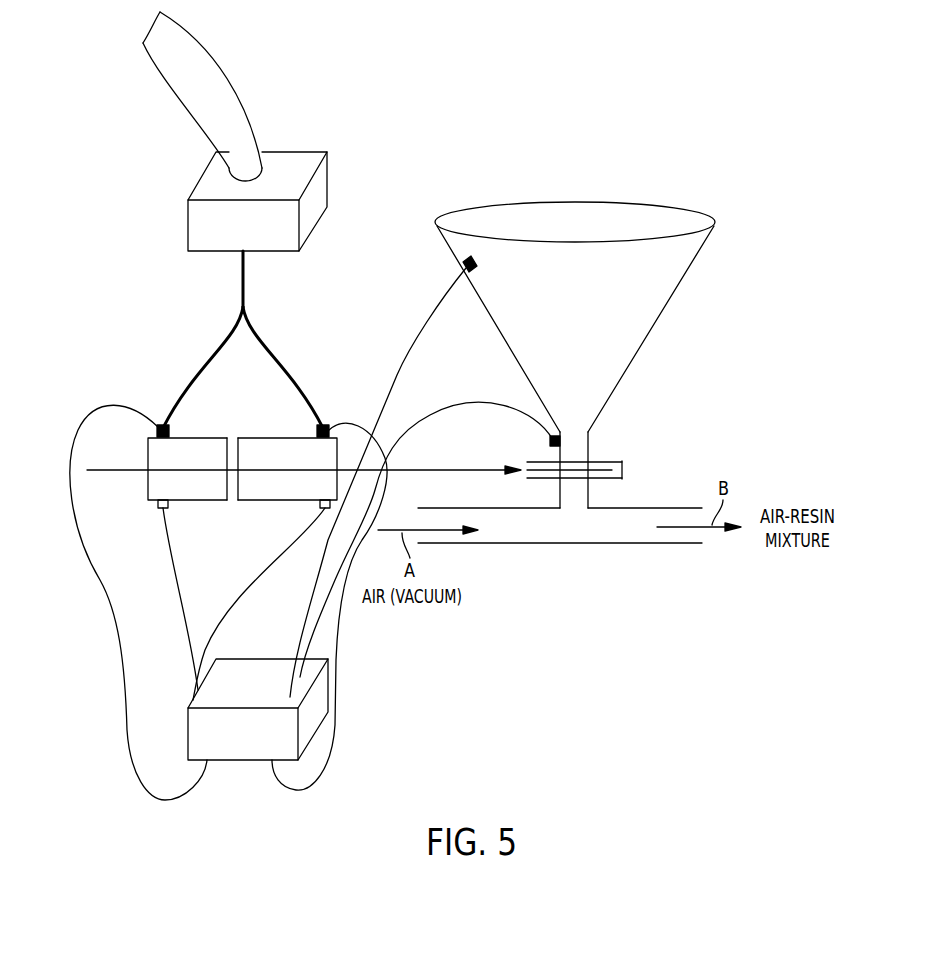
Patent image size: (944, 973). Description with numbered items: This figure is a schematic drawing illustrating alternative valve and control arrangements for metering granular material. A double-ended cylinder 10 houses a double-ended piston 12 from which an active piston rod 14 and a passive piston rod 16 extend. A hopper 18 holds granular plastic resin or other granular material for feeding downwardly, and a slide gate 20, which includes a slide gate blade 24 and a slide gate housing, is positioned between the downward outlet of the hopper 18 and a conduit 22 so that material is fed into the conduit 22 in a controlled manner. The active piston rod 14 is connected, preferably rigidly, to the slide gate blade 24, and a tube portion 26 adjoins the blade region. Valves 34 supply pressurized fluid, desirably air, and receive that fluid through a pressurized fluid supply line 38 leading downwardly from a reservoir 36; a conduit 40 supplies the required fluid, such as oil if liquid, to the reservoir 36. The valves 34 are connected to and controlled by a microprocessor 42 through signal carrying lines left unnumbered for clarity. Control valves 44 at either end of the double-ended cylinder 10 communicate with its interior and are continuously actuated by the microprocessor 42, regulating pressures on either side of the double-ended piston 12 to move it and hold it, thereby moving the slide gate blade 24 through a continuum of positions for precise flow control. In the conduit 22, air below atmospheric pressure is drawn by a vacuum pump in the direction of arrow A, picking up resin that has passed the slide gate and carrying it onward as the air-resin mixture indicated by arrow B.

The double-ended cylinder 10 is at (242, 432).
The double-ended piston 12 is at (229, 440).
The active piston rod 14 is at (275, 468).
The passive piston rod 16 is at (103, 468).
The hopper 18 is at (673, 282).
The slide gate 20 is at (617, 440).
The conduit 22 is at (590, 545).
The slide gate blade 24 is at (525, 467).
The venturi tube end 26 is at (623, 478).
The valves 34 is at (160, 425).
The reservoir 36 is at (298, 160).
The pressurized fluid supply line 38 is at (246, 272).
The conduit 40 is at (212, 67).
The microprocessor 42 is at (234, 748).
The control valves 44 is at (168, 508).